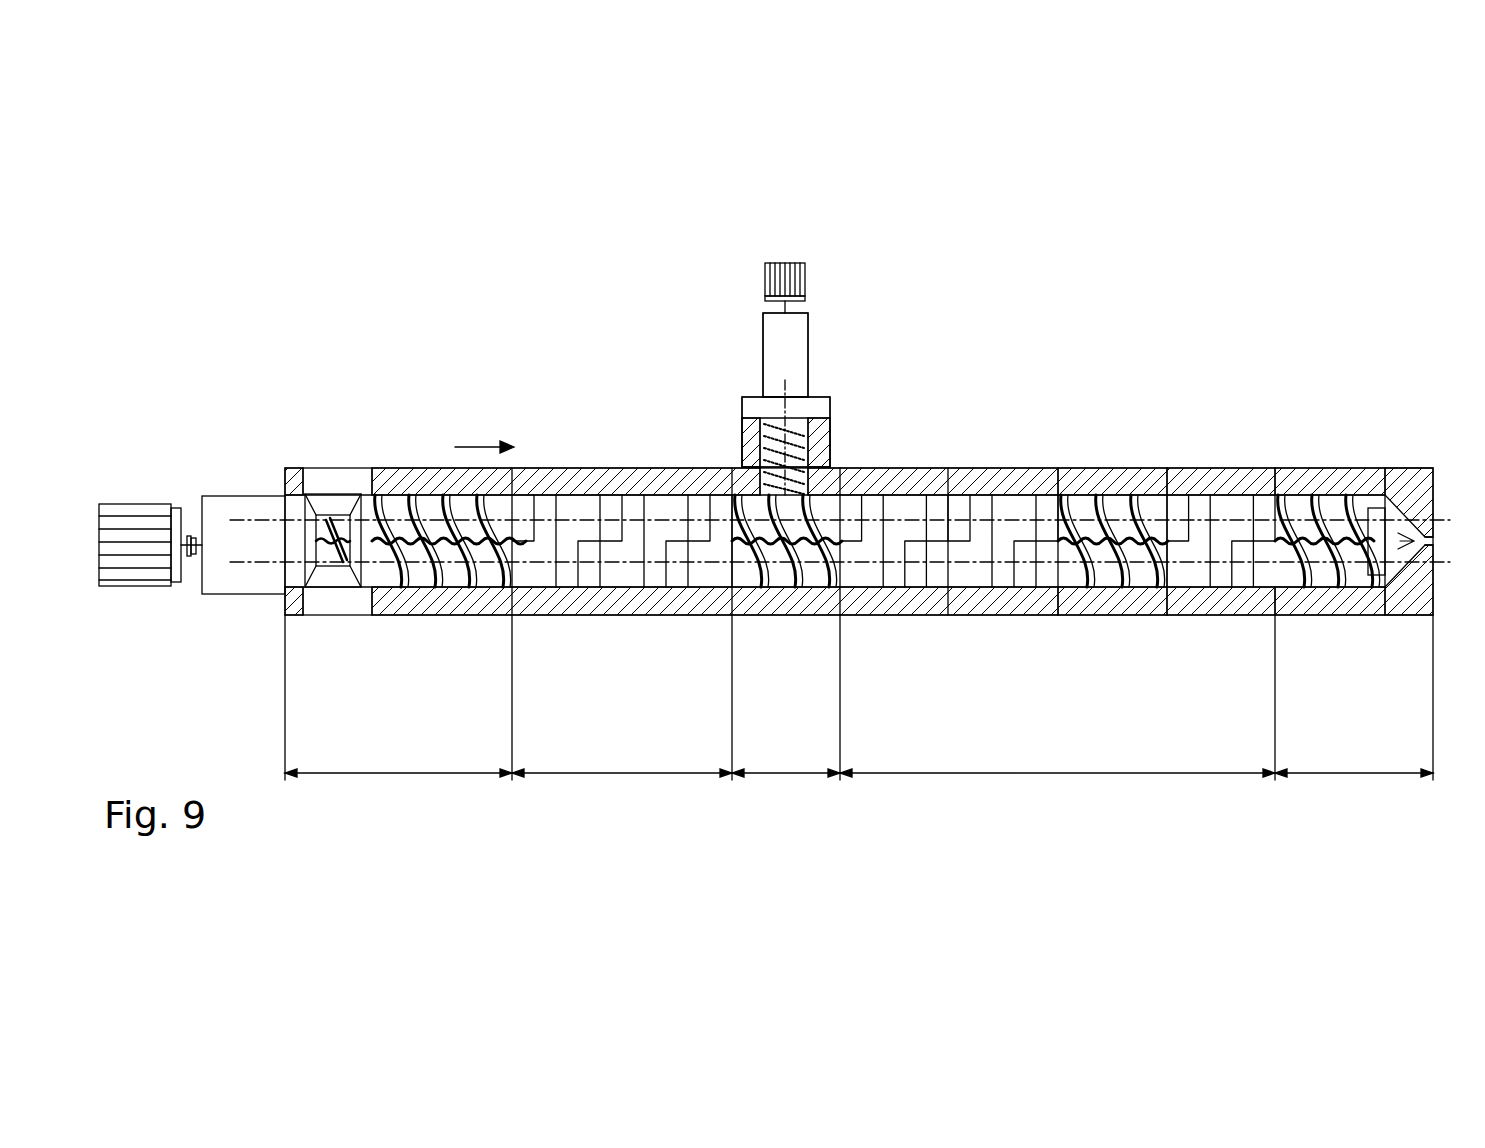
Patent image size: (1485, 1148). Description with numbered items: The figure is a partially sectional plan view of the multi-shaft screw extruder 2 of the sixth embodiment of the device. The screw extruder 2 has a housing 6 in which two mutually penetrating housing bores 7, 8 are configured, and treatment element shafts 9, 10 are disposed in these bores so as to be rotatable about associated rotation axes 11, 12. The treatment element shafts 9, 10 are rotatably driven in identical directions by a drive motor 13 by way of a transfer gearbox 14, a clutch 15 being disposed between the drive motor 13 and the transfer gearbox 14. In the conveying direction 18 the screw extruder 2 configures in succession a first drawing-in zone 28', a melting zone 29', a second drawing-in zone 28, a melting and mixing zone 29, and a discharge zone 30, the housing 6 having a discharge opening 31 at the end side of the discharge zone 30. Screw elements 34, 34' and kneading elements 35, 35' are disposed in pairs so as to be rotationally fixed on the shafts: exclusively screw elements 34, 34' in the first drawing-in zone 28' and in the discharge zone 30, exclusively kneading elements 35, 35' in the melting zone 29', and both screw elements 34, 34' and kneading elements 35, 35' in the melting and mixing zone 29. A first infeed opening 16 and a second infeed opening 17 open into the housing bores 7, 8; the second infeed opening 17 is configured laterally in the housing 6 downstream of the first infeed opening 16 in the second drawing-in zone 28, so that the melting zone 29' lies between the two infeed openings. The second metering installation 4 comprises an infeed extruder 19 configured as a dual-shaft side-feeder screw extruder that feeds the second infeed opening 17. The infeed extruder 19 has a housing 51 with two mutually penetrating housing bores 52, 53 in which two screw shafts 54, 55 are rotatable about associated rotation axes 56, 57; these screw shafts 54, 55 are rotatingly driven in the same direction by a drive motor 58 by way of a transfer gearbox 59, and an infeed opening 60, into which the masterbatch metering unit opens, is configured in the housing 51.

The multi-shaft screw extruder 2 is at (553, 466).
The second metering installation 4 is at (790, 257).
The housing 6 is at (916, 466).
The housing bore 7 is at (1100, 580).
The housing bore 8 is at (1100, 496).
The treatment element shaft 9 is at (1131, 592).
The treatment element shaft 10 is at (1128, 496).
The rotation axis 11 is at (1200, 565).
The rotation axis 12 is at (1240, 510).
The drive motor 13 is at (127, 508).
The transfer gearbox 14 is at (230, 505).
The clutch 15 is at (192, 535).
The first infeed opening 16 is at (325, 514).
The second infeed opening 17 is at (760, 580).
The conveying direction 18 is at (463, 440).
The infeed extruder 19 is at (818, 293).
The second drawing-in zone 28 is at (786, 697).
The first drawing-in zone 28' is at (398, 697).
The melting and mixing zone 29 is at (1057, 697).
The melting zone 29' is at (622, 697).
The discharge zone 30 is at (1354, 697).
The discharge opening 31 is at (1435, 540).
The screw element 34 is at (873, 621).
The screw element 34' is at (877, 475).
The kneading element 35 is at (936, 599).
The kneading element 35' is at (756, 475).
The housing 51 is at (790, 430).
The housing bore 52 is at (760, 420).
The housing bore 53 is at (806, 398).
The screw shaft 54 is at (745, 415).
The screw shaft 55 is at (800, 420).
The rotation axis 56 is at (770, 395).
The rotation axis 57 is at (812, 398).
The drive motor 58 is at (772, 262).
The transfer gearbox 59 is at (775, 320).
The infeed opening 60 is at (773, 390).